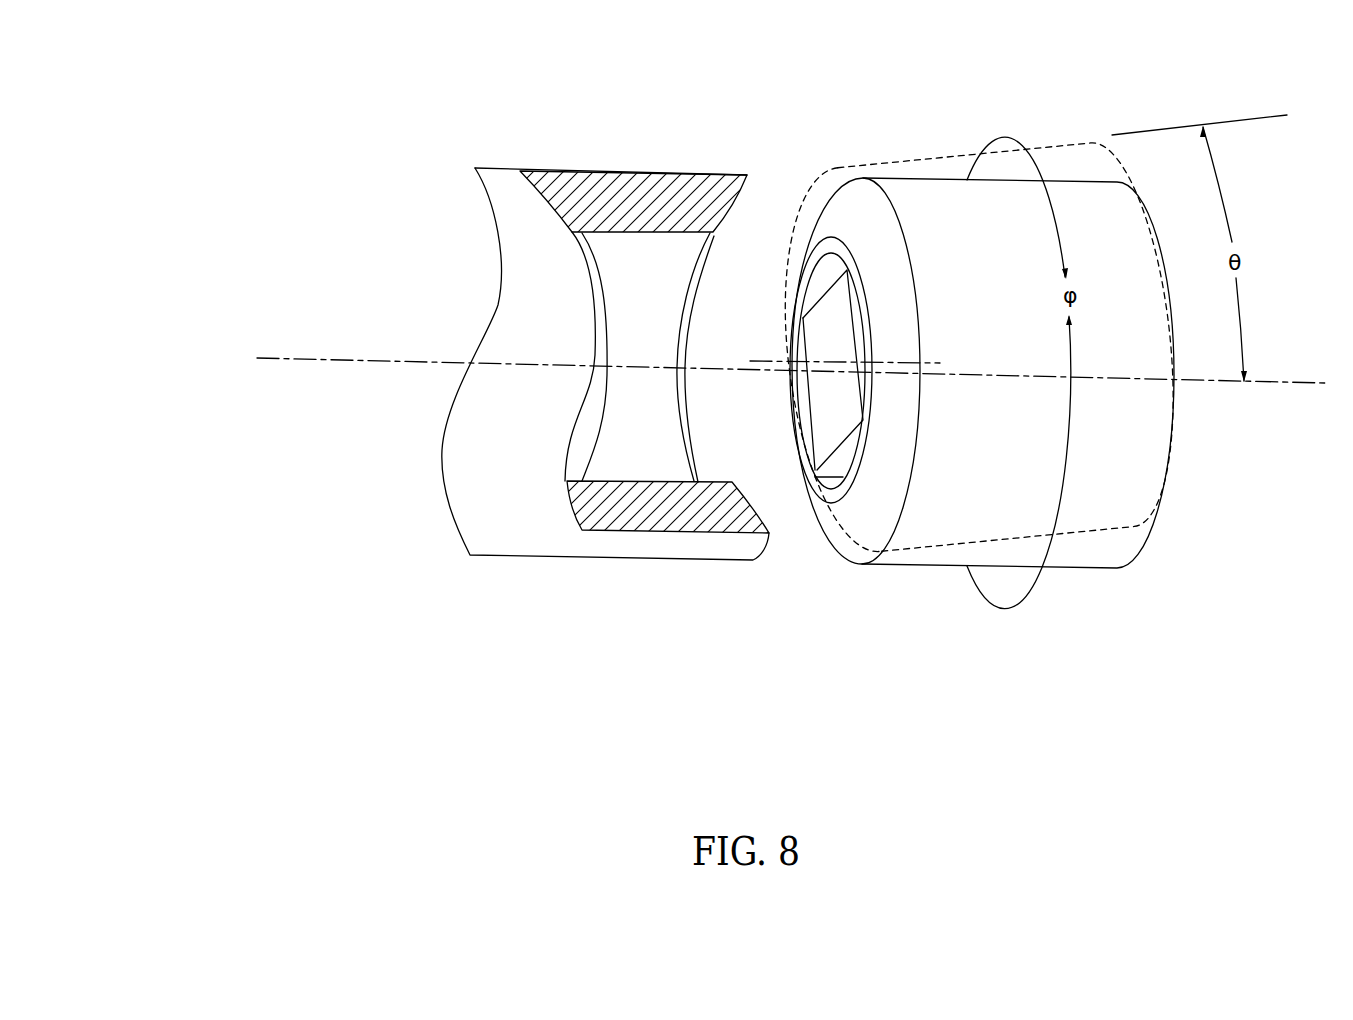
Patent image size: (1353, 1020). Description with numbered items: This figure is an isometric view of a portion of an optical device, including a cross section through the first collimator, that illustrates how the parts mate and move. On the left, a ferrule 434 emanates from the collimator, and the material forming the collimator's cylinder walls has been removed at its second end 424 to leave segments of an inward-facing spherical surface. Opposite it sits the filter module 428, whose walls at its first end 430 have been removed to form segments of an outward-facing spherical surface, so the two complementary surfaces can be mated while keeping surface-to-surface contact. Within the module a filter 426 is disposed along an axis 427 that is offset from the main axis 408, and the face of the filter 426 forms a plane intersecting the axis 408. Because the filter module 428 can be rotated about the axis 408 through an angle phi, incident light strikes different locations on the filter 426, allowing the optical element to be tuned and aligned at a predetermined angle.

The axis 408 is at (240, 340).
The second end 424 is at (712, 150).
The filter 426 is at (825, 447).
The axis 427 is at (900, 357).
The filter module 428 is at (1132, 550).
The first end 430 is at (867, 158).
The ferrule 434 is at (473, 158).